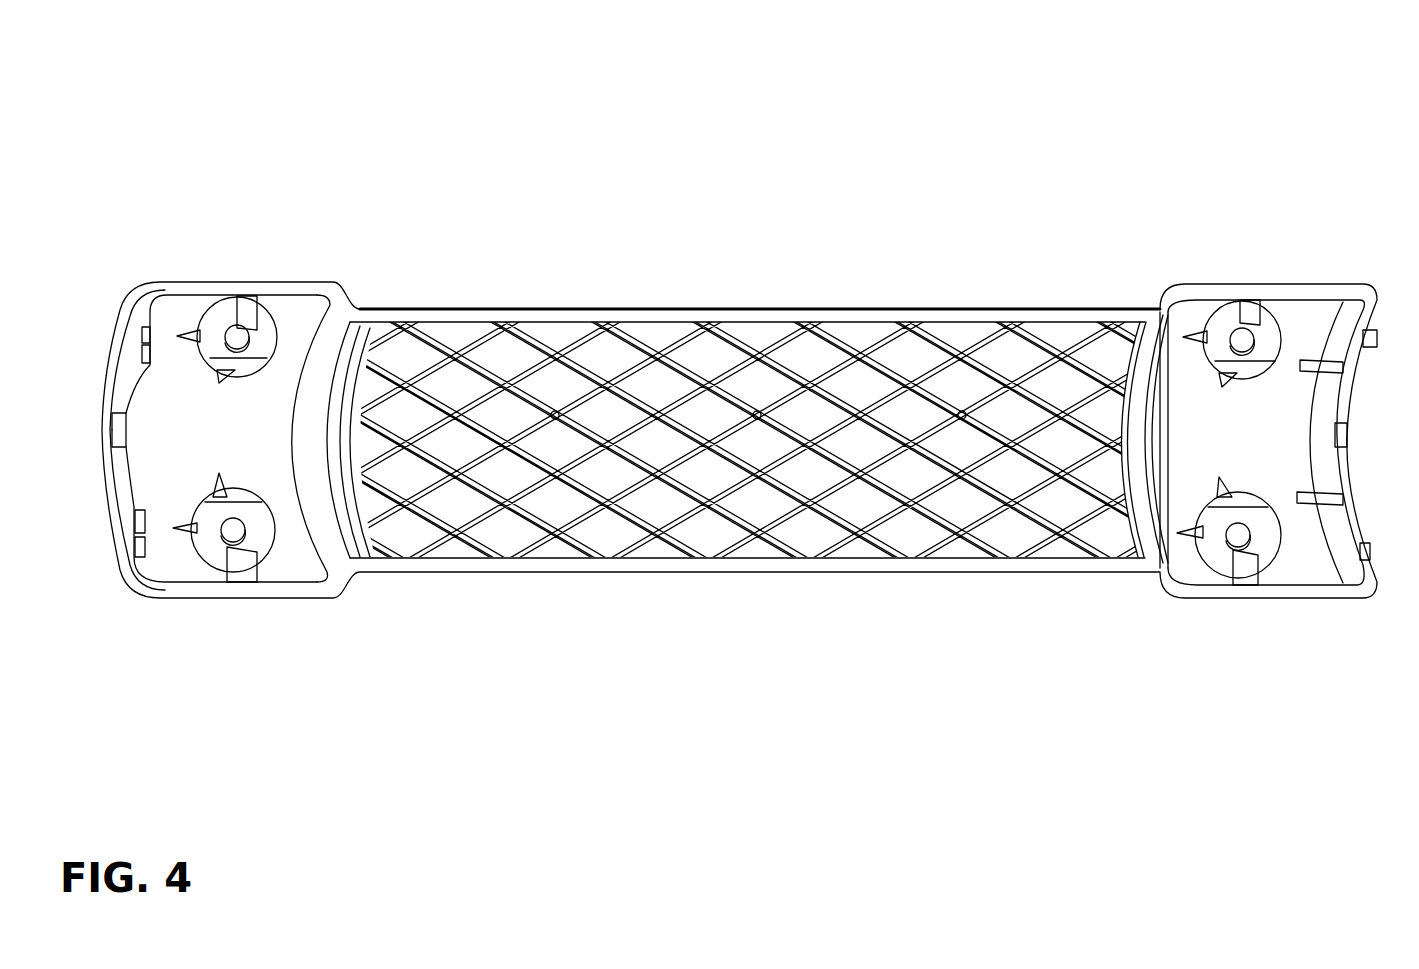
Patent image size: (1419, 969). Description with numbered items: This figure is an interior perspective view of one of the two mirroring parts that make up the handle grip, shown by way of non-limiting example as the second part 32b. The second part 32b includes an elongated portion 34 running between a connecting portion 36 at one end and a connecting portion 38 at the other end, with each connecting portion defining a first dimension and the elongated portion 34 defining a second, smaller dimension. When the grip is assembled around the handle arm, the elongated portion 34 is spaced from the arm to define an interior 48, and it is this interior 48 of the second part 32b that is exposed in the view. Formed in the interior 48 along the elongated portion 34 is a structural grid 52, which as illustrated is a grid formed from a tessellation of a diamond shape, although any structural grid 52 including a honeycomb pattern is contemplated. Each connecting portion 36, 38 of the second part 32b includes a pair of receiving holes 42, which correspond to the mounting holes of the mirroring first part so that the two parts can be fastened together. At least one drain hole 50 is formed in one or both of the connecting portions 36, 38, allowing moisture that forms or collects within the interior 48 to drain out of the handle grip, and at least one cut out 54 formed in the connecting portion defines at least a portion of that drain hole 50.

The second part 32b is at (258, 62).
The elongated portion 34 is at (578, 320).
The connecting portion 36 is at (1303, 300).
The connecting portion 38 is at (212, 292).
The receiving holes 42 is at (1240, 535).
The interior 48 is at (766, 458).
The drain hole 50 is at (110, 440).
The structural grid 52 is at (678, 432).
The cut out 54 is at (110, 432).